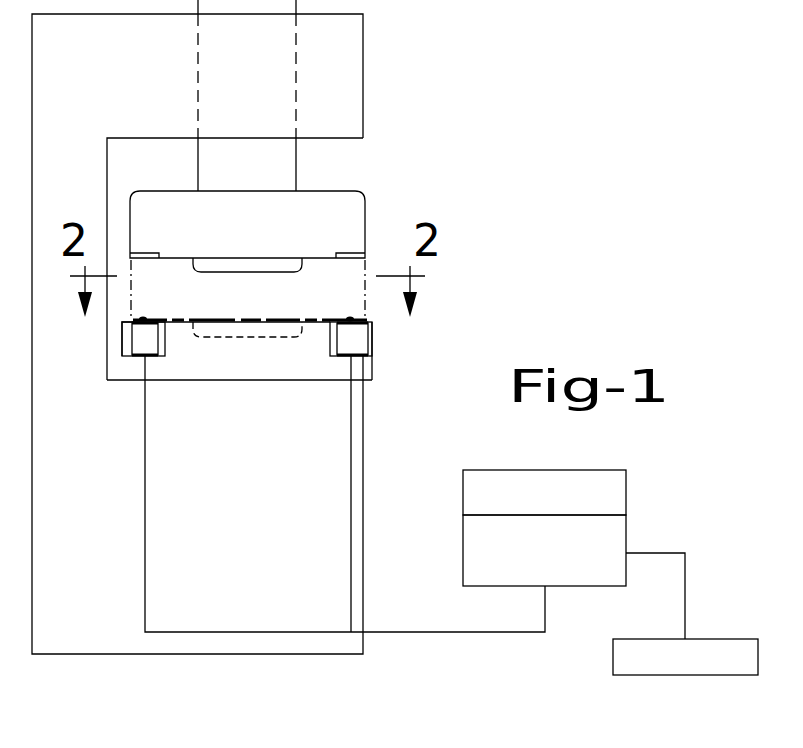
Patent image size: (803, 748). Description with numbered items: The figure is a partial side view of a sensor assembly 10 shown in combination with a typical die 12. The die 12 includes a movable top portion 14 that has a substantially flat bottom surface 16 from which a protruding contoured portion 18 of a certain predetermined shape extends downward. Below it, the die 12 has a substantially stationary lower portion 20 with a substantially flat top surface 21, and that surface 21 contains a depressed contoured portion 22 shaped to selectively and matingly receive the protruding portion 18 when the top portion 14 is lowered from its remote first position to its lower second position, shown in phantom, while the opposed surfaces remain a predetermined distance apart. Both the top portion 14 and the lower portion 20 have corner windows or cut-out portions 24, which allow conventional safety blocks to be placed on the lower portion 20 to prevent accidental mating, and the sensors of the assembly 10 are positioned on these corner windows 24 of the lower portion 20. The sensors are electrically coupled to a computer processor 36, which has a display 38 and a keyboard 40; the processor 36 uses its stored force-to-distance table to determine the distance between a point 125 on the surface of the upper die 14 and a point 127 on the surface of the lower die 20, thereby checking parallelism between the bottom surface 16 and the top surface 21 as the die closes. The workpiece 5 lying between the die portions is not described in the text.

The workpiece sheet 5 is at (349, 298).
The sensor assembly 10 is at (455, 365).
The die 12 is at (512, 143).
The movable top portion 14 is at (334, 205).
The bottom surface 16 is at (163, 262).
The protruding contoured portion 18 is at (238, 266).
The lower portion 20 is at (366, 372).
The top surface 21 is at (175, 325).
The depressed contoured portion 22 is at (247, 328).
The corner windows 24 is at (372, 340).
The computer processor 36 is at (463, 553).
The display 38 is at (593, 468).
The keyboard 40 is at (655, 677).
The point on the surface of the upper die 125 is at (186, 248).
The point on the surface of the lower die 127 is at (322, 358).